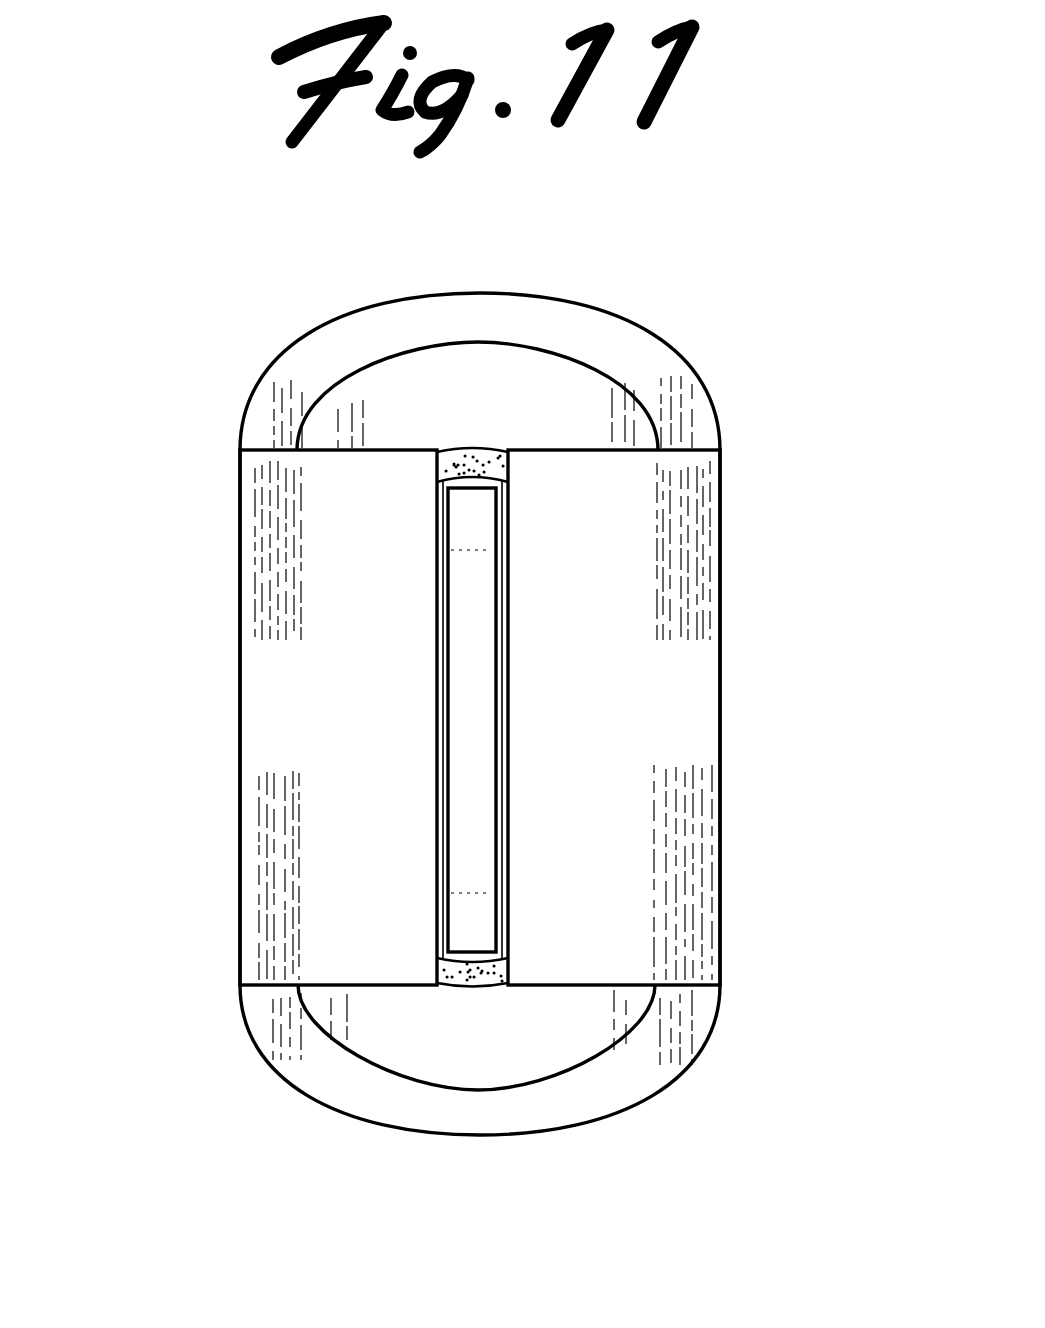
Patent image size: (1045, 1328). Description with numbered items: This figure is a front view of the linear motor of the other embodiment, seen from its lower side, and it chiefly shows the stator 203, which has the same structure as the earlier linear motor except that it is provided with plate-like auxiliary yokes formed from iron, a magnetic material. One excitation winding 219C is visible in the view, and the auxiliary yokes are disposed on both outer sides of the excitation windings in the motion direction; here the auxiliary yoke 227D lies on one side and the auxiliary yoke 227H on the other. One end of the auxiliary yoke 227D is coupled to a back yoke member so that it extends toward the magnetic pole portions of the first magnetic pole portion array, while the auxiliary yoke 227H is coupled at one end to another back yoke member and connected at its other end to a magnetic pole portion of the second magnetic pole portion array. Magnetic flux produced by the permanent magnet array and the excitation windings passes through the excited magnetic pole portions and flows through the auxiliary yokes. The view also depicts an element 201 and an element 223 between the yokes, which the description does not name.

The stator 203 is at (238, 398).
The excitation winding 219C is at (400, 398).
The magnet 201 is at (480, 550).
The auxiliary yoke 227D is at (263, 713).
The auxiliary yoke 227H is at (682, 773).
The filler / spacer 223 is at (483, 980).